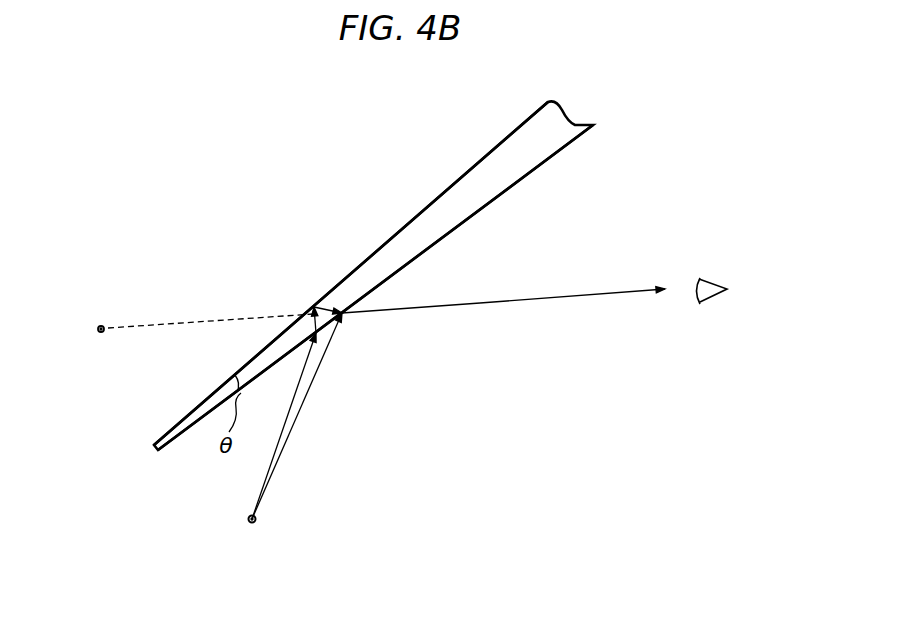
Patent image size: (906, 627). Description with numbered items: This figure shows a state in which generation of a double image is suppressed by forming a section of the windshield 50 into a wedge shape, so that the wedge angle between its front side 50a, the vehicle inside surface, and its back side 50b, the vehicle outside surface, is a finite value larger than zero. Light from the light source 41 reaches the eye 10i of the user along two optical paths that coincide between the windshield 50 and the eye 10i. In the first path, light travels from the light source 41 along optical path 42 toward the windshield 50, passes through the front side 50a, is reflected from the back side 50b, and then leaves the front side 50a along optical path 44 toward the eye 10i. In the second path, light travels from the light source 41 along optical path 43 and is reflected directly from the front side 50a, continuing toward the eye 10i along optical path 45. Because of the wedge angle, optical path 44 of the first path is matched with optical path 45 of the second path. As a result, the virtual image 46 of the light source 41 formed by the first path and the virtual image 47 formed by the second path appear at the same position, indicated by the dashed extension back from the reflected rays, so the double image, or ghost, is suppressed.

The eye 10i is at (716, 283).
The light source 41 is at (252, 525).
The optical path 42 is at (296, 392).
The optical path 43 is at (312, 387).
The optical path 44 is at (418, 305).
The optical path 45 is at (468, 305).
The virtual image 46 is at (98, 327).
The virtual image 47 is at (100, 335).
The windshield 50 is at (498, 143).
The front side 50a is at (490, 205).
The back side 50b is at (447, 190).